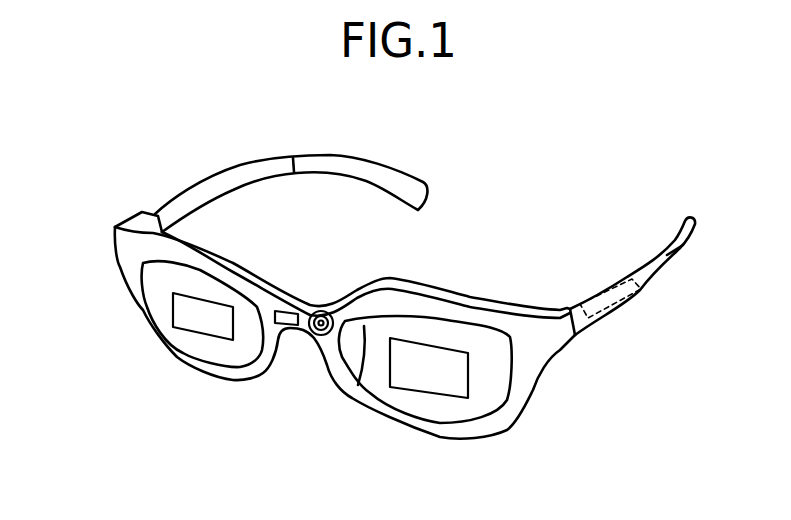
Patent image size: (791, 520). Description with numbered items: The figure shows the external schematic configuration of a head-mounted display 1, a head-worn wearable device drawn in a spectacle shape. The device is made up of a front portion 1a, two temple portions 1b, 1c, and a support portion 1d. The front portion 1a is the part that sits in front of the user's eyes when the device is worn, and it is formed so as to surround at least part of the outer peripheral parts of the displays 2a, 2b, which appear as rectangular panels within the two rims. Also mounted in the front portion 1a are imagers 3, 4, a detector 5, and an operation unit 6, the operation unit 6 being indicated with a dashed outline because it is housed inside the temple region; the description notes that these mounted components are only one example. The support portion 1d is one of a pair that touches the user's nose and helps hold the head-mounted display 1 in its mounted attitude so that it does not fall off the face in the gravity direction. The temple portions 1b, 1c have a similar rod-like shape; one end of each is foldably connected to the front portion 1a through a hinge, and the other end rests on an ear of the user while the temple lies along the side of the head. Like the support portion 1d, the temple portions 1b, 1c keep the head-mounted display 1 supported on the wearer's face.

The head-mounted display 1 is at (548, 158).
The front portion 1a is at (453, 298).
The temple portion 1b is at (240, 178).
The temple portion 1c is at (650, 266).
The support portion 1d is at (353, 360).
The display 2a is at (200, 323).
The display 2b is at (427, 387).
The imager 3 is at (320, 336).
The imager 4 is at (515, 304).
The detector 5 is at (295, 320).
The operation unit 6 is at (607, 290).